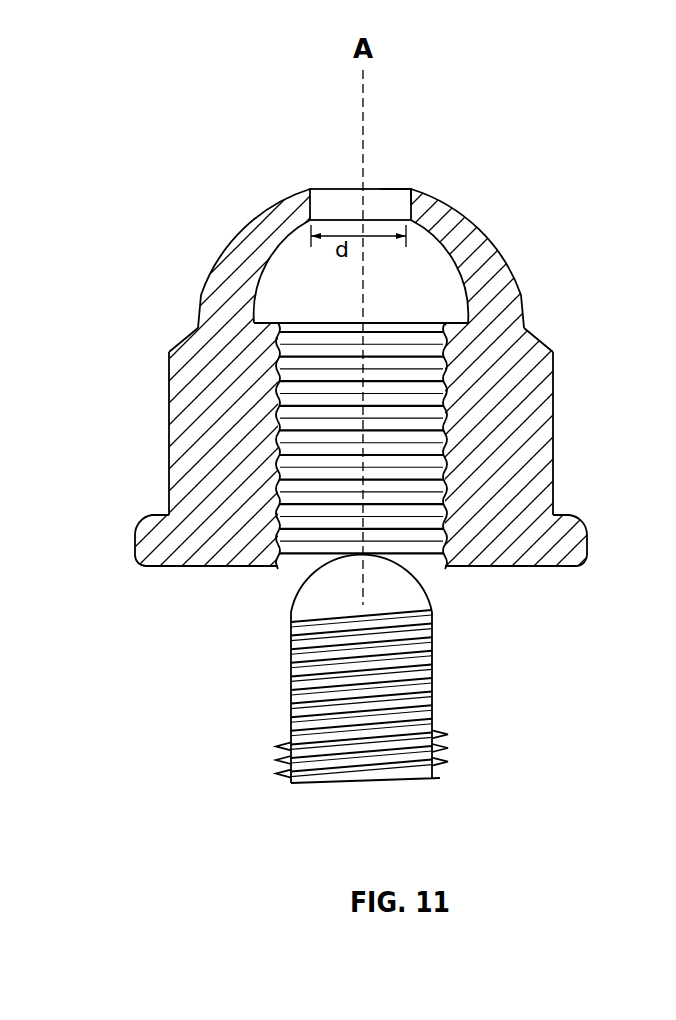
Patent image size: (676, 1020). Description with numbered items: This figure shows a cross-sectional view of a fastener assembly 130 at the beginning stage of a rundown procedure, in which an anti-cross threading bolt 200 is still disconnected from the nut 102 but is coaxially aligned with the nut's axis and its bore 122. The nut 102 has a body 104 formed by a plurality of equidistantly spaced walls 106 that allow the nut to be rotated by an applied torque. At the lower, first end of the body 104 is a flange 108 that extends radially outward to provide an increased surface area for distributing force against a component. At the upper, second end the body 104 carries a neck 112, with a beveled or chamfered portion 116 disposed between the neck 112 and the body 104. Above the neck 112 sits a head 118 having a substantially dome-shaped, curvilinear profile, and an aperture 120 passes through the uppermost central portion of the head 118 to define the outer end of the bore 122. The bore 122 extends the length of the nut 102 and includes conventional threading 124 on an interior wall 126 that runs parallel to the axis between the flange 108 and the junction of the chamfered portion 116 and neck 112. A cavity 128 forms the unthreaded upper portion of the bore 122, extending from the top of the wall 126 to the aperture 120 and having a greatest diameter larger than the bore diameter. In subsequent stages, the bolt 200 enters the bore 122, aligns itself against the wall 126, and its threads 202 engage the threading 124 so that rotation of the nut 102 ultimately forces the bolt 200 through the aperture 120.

The fastener assembly 130 is at (229, 48).
The nut 102 is at (215, 170).
The body 104 is at (490, 553).
The walls 106 is at (168, 448).
The flange 108 is at (150, 516).
The neck 112 is at (522, 293).
The chamfered portion 116 is at (537, 333).
The head 118 is at (462, 232).
The aperture 120 is at (330, 186).
The bore 122 is at (408, 184).
The threading 124 is at (297, 340).
The interior wall 126 is at (277, 412).
The cavity 128 is at (306, 248).
The anti-cross threading bolt 200 is at (271, 678).
The threads 202 is at (279, 740).